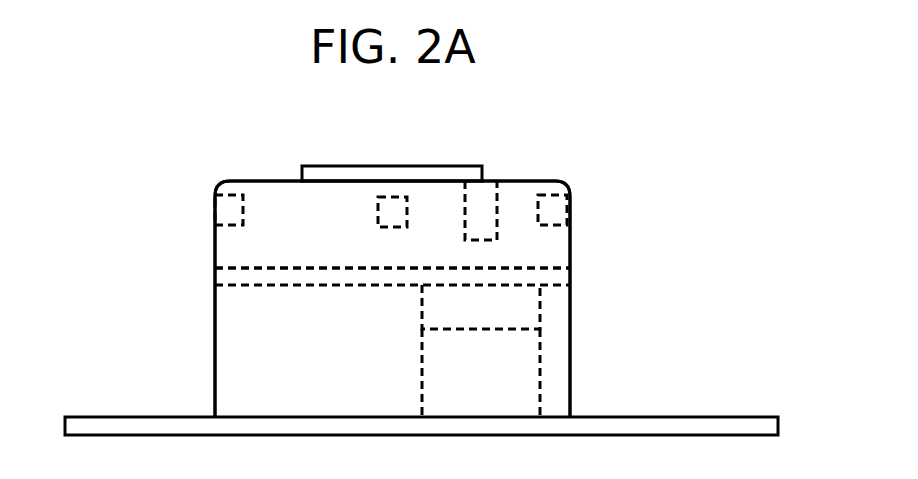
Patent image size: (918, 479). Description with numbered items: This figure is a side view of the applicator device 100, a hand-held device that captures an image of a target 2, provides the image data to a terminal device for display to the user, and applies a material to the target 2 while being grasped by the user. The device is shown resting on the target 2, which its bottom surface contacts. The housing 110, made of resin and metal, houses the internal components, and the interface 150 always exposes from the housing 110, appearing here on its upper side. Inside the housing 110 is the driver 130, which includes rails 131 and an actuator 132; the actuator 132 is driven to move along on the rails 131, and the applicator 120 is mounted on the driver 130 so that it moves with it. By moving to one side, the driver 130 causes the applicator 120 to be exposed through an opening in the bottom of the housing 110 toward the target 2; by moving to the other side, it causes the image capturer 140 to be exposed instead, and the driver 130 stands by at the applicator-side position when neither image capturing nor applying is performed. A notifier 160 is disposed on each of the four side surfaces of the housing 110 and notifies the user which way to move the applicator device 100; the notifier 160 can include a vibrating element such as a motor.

The target 2 is at (124, 417).
The applicator device 100 is at (239, 174).
The housing 110 is at (553, 180).
The applicator 120 is at (422, 378).
The driver 130 is at (571, 282).
The rails 131 is at (272, 268).
The actuator 132 is at (422, 321).
The image capturer 140 is at (482, 181).
The interface 150 is at (383, 166).
The notifier 160 is at (213, 212).